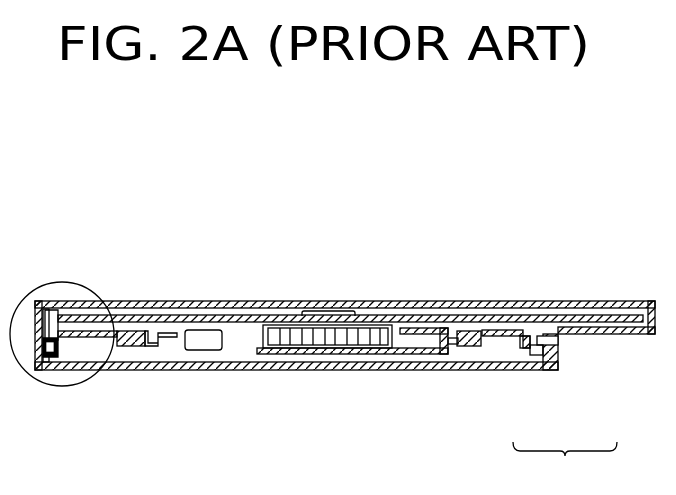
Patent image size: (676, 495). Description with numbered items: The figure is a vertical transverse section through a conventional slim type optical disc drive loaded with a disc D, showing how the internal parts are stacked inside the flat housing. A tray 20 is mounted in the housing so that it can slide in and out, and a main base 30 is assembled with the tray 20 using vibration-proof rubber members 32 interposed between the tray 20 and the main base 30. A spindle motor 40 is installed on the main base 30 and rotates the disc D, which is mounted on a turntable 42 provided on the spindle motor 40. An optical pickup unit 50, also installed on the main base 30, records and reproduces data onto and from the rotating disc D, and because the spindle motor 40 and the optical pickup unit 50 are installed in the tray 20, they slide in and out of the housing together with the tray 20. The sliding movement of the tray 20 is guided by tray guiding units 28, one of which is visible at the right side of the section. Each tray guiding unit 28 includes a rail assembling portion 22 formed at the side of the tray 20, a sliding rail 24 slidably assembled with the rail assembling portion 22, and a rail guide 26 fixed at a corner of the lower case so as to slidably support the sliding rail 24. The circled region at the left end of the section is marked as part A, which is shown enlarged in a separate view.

The tray 20 is at (508, 333).
The rail assembling portion 22 is at (530, 365).
The sliding rail 24 is at (540, 366).
The rail guide 26 is at (557, 366).
The tray guiding unit 28 is at (565, 462).
The main base 30 is at (403, 354).
The vibration-proof rubber member 32 is at (133, 346).
The spindle motor 40 is at (327, 348).
The turntable 42 is at (272, 313).
The optical pickup unit 50 is at (200, 350).
The part A is at (60, 282).
The disc D is at (163, 302).